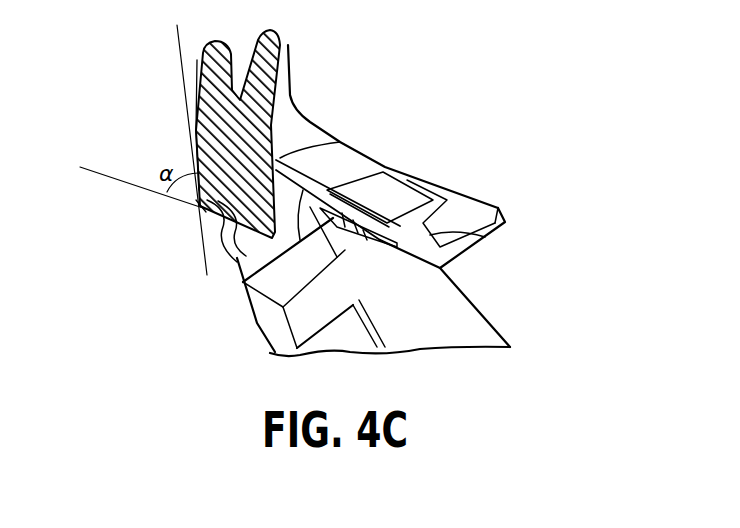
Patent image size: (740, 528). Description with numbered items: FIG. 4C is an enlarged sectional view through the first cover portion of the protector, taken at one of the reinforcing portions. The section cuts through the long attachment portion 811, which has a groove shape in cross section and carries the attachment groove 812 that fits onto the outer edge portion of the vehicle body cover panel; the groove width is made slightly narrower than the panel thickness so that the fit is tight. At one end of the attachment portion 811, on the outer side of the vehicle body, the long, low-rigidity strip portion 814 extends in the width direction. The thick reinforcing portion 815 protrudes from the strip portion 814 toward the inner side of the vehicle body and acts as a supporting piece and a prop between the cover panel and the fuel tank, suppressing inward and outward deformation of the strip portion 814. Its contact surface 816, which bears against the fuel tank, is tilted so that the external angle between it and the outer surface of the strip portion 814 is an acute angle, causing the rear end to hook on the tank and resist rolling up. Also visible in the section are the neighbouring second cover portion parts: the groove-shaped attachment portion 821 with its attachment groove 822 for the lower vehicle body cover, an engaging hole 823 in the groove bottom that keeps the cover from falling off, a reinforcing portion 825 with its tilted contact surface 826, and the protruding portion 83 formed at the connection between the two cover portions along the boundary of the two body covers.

The attachment portion 811 is at (283, 82).
The attachment groove 812 is at (235, 78).
The strip portion 814 is at (197, 105).
The reinforcing portion 815 is at (199, 207).
The contact surface 816 is at (237, 263).
The attachment portion 821 is at (470, 327).
The attachment groove 822 is at (480, 236).
The engaging hole 823 is at (357, 250).
The reinforcing portion 825 is at (315, 318).
The contact surface 826 is at (270, 313).
The protruding portion 83 is at (400, 252).